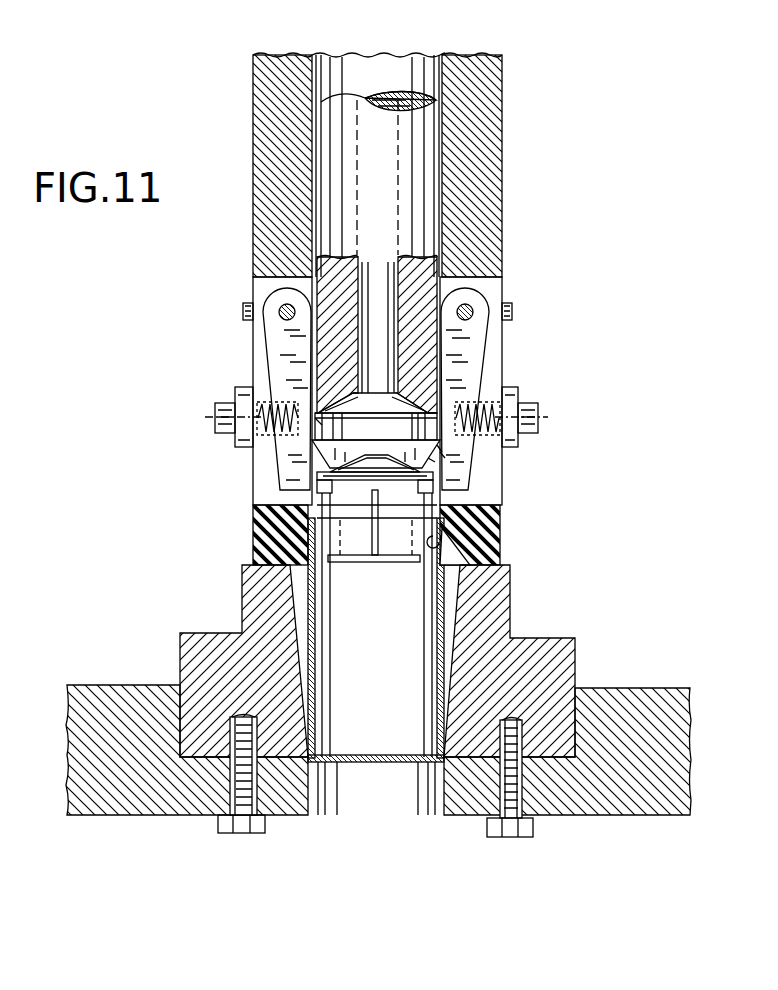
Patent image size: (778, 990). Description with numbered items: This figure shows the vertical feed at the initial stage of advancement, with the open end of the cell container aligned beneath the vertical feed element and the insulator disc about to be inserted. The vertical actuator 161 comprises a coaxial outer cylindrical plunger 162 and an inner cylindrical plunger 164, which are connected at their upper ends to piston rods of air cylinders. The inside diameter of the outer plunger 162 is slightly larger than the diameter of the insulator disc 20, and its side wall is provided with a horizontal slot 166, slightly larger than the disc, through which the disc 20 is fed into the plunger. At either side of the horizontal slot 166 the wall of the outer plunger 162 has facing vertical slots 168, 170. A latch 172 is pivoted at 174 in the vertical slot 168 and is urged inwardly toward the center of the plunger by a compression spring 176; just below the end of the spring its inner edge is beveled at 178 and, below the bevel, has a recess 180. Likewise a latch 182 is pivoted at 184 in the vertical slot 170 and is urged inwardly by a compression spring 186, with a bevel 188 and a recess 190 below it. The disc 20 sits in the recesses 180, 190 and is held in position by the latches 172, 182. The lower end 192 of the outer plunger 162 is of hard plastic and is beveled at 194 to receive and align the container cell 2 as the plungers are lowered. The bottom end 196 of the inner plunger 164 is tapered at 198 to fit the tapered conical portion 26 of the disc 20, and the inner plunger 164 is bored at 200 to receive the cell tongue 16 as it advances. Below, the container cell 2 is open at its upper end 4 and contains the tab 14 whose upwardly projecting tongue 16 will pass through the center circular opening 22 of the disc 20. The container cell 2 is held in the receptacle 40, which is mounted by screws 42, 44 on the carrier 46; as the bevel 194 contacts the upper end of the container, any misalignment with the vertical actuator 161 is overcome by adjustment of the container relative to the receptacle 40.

The container cell 2 is at (445, 578).
The upper end 4 is at (437, 540).
The tab 14 is at (374, 559).
The tongue 16 is at (375, 522).
The insulator disc 20 is at (393, 470).
The center circular opening 22 is at (375, 421).
The tapered conical portion 26 is at (399, 456).
The receptacle 40 is at (258, 618).
The screw 42 is at (243, 833).
The screw 44 is at (507, 837).
The carrier 46 is at (640, 705).
The vertical actuator 161 is at (422, 165).
The outer cylindrical plunger 162 is at (503, 162).
The inner cylindrical plunger 164 is at (378, 138).
The horizontal slot 166 is at (440, 455).
The vertical slot 168 is at (234, 362).
The vertical slot 170 is at (518, 362).
The latch 172 is at (248, 355).
The pivot 174 is at (287, 310).
The compression spring 176 is at (215, 417).
The bevel 178 is at (313, 453).
The recess 180 is at (318, 463).
The latch 182 is at (515, 355).
The pivot 184 is at (465, 310).
The compression spring 186 is at (538, 421).
The bevel 188 is at (440, 450).
The recess 190 is at (433, 460).
The lower end 192 is at (258, 547).
The bevel 194 is at (445, 540).
The bottom end 196 is at (320, 418).
The taper 198 is at (330, 395).
The bore 200 is at (390, 100).